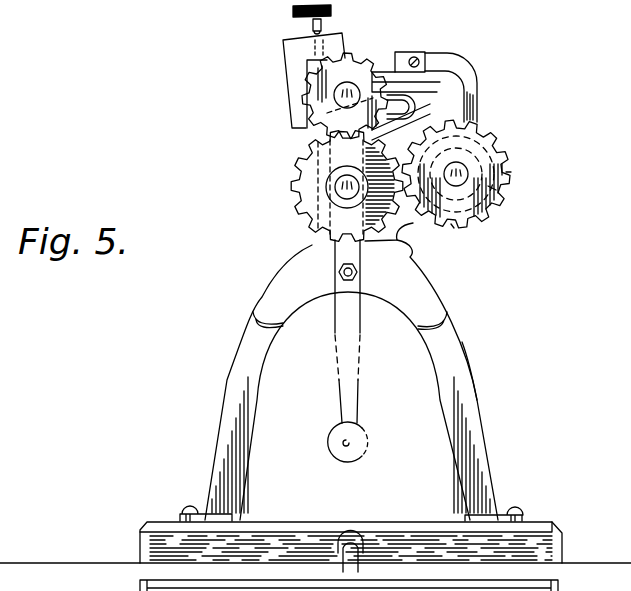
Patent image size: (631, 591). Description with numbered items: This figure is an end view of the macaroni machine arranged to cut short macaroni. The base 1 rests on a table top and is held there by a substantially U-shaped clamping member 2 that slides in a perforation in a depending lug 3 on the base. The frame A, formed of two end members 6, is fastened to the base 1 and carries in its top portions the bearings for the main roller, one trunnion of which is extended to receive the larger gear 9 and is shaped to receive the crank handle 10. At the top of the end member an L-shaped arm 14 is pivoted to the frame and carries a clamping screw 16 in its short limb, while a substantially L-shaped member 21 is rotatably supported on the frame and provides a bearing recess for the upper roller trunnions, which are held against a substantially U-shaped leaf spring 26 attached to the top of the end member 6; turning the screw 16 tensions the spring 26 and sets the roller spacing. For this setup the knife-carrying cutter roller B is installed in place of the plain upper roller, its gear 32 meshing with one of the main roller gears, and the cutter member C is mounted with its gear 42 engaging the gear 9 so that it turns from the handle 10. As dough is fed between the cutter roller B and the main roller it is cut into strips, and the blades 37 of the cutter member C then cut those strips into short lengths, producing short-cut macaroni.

The base 1 is at (547, 528).
The clamping member 2 is at (348, 542).
The depending lug 3 is at (341, 532).
The end member 6 is at (463, 340).
The larger gear 9 is at (296, 191).
The crank handle 10 is at (356, 386).
The L-shaped arm 14 is at (291, 48).
The clamping screw 16 is at (293, 12).
The L-shaped member 21 is at (459, 61).
The leaf spring 26 is at (416, 108).
The gear 32 is at (305, 105).
The blade 37 is at (511, 171).
The gear 42 is at (496, 190).
The frame A is at (475, 377).
The cutter roller B is at (364, 45).
The cutter member C is at (508, 131).